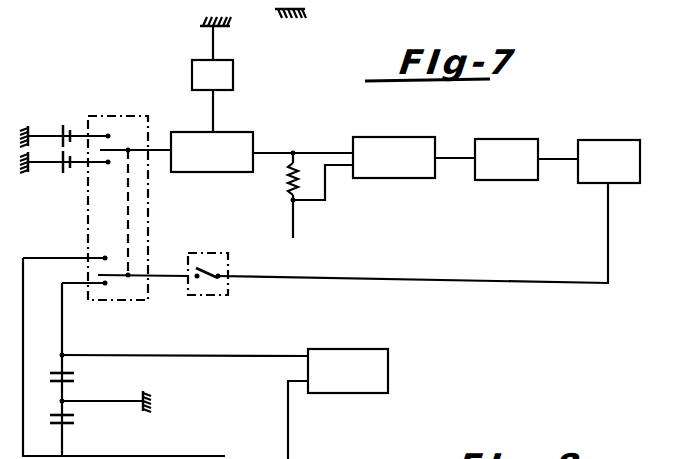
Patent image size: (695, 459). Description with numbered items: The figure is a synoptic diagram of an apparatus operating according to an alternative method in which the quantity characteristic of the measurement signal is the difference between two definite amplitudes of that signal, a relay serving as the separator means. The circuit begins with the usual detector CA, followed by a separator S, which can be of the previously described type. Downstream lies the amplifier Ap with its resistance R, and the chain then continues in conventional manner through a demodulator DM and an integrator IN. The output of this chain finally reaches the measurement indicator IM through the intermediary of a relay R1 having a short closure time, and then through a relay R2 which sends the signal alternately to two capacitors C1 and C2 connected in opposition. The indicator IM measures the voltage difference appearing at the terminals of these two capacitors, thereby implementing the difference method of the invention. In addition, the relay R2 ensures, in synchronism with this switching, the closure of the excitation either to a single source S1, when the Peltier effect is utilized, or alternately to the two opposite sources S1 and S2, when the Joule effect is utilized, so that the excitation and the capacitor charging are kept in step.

The single source S1 is at (65, 123).
The second opposite source S2 is at (65, 175).
The detector CA is at (212, 74).
The separator S is at (212, 152).
The resistance R is at (303, 123).
The amplifier Ap is at (414, 157).
The demodulator DM is at (526, 159).
The integrator IN is at (429, 211).
The relay with short closure time R1 is at (208, 262).
The relay R2 is at (105, 222).
The measurement indicator IM is at (225, 404).
The first capacitor C1 is at (77, 372).
The second capacitor C2 is at (100, 412).